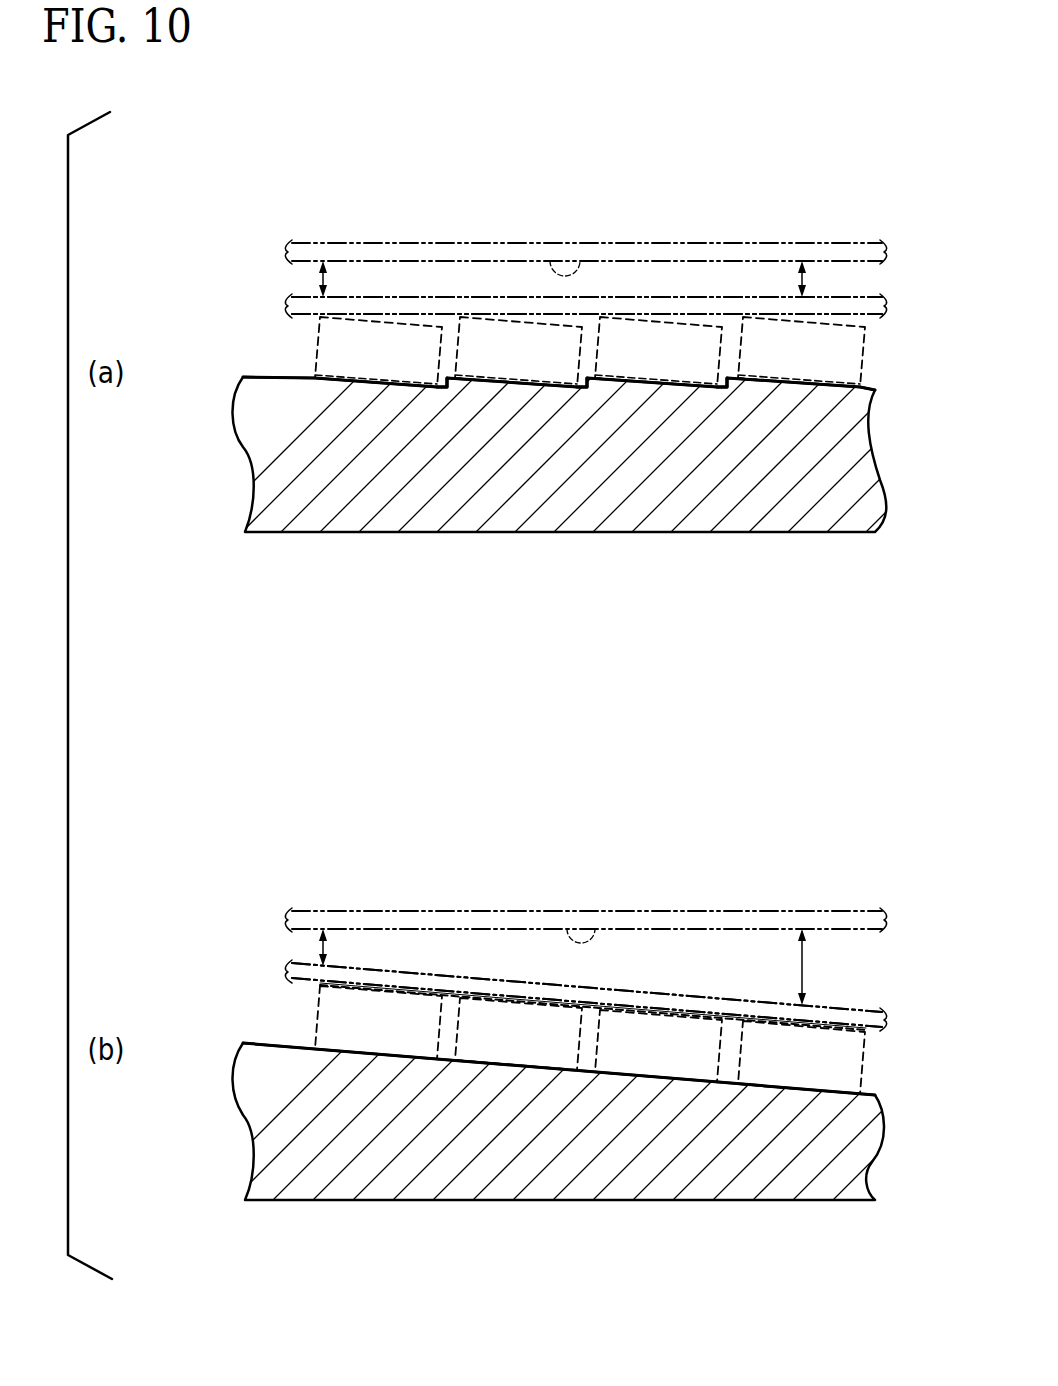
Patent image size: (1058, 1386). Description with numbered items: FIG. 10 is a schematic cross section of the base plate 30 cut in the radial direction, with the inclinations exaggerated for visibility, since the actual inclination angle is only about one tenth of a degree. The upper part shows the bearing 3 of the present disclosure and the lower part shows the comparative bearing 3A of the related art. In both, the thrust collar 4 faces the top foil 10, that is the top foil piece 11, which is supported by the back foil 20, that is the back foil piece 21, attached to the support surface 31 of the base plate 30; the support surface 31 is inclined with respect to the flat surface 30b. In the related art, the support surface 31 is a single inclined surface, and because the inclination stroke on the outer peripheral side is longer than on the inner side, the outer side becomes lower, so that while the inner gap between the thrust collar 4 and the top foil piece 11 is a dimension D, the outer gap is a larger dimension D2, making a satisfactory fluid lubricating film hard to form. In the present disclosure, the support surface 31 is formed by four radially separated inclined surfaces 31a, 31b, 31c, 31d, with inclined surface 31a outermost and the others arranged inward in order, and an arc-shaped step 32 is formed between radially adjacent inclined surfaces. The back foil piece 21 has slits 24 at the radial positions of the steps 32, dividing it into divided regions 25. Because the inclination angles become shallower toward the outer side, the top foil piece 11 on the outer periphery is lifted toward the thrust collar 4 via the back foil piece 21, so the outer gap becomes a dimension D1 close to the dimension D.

The laminated structure 3 is at (261, 204).
The laminated structure (tilted state) 3A is at (260, 873).
The thrust collar 4 is at (582, 259).
The first sheet 10 is at (515, 296).
The top foil piece 11 is at (587, 654).
The second sheet 20 is at (647, 303).
The back foil piece 21 is at (587, 670).
The slit 24 is at (578, 348).
The divided region 25 is at (781, 318).
The base plate 30 is at (262, 456).
The flat surface 30b is at (272, 377).
The support surface 31 is at (822, 608).
The inclined surface 31a is at (800, 368).
The inclined surface 31b is at (657, 368).
The inclined surface 31c is at (517, 368).
The inclined surface 31d is at (382, 368).
The step 32 is at (440, 389).
The dimension D is at (318, 279).
The dimension D1 is at (808, 275).
The dimension D2 is at (808, 968).